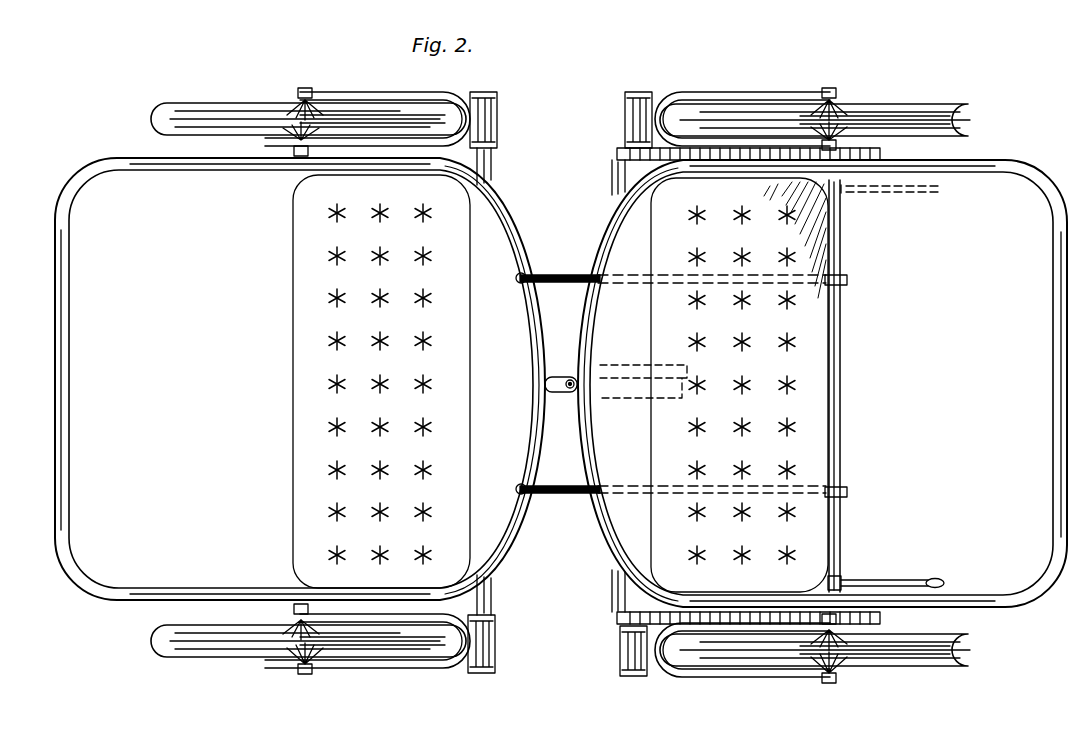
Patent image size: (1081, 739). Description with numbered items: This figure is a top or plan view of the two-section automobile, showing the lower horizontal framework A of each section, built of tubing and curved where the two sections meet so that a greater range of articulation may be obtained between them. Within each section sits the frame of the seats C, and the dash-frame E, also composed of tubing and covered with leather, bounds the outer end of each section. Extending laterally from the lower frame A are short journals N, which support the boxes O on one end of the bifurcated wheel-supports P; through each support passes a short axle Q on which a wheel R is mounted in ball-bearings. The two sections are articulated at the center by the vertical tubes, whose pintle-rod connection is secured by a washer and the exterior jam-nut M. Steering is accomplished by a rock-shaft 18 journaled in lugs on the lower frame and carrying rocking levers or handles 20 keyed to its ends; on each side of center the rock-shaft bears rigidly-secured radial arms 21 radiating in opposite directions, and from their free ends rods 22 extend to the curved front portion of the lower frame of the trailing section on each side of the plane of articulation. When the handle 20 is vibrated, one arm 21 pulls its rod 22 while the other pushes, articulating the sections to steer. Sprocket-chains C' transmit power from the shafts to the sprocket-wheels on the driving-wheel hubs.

The dash-frame E is at (72, 357).
The lower horizontal framework A is at (1006, 180).
The frame of the seats C is at (561, 383).
The sprocket-chains C' is at (687, 388).
The jam-nut M is at (570, 379).
The rods 22 is at (556, 275).
The rock-shaft 18 is at (842, 437).
The radial arms 21 is at (847, 497).
The rocking levers or handles 20 is at (889, 195).
The short journals N is at (492, 166).
The boxes O is at (497, 116).
The bifurcated wheel-supports P is at (390, 685).
The short axle Q is at (293, 151).
The wheels R is at (753, 690).